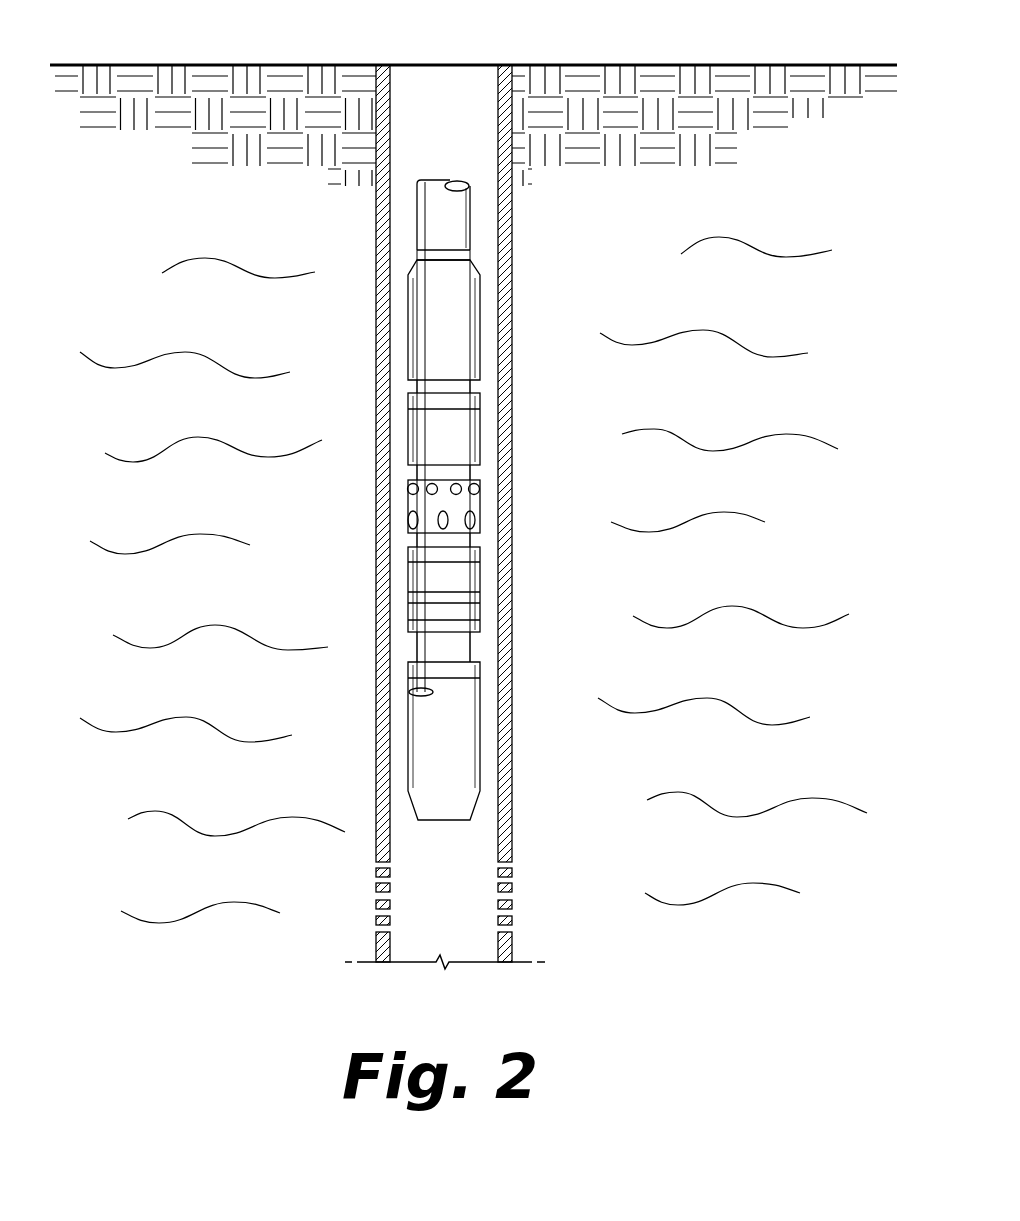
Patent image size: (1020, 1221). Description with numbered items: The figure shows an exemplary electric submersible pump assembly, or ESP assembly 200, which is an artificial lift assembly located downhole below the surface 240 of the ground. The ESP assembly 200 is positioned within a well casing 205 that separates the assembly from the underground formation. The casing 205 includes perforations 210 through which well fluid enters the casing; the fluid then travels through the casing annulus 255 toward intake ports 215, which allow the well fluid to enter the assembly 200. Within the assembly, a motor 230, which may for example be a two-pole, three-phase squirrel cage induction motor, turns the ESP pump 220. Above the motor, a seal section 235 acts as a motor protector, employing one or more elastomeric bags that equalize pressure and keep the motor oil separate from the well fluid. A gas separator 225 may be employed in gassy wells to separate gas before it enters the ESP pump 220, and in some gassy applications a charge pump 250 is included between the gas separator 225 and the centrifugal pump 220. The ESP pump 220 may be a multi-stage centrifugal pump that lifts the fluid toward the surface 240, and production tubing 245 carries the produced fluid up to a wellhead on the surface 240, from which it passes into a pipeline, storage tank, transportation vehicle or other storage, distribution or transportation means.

The ESP assembly 200 is at (500, 368).
The well casing 205 is at (386, 232).
The perforations 210 is at (510, 863).
The intake ports 215 is at (472, 519).
The ESP pump 220 is at (443, 332).
The gas separator 225 is at (432, 504).
The motor 230 is at (447, 737).
The seal section 235 is at (440, 578).
The surface 240 is at (175, 64).
The production tubing 245 is at (450, 222).
The charge pump 250 is at (443, 430).
The casing annulus 255 is at (481, 88).